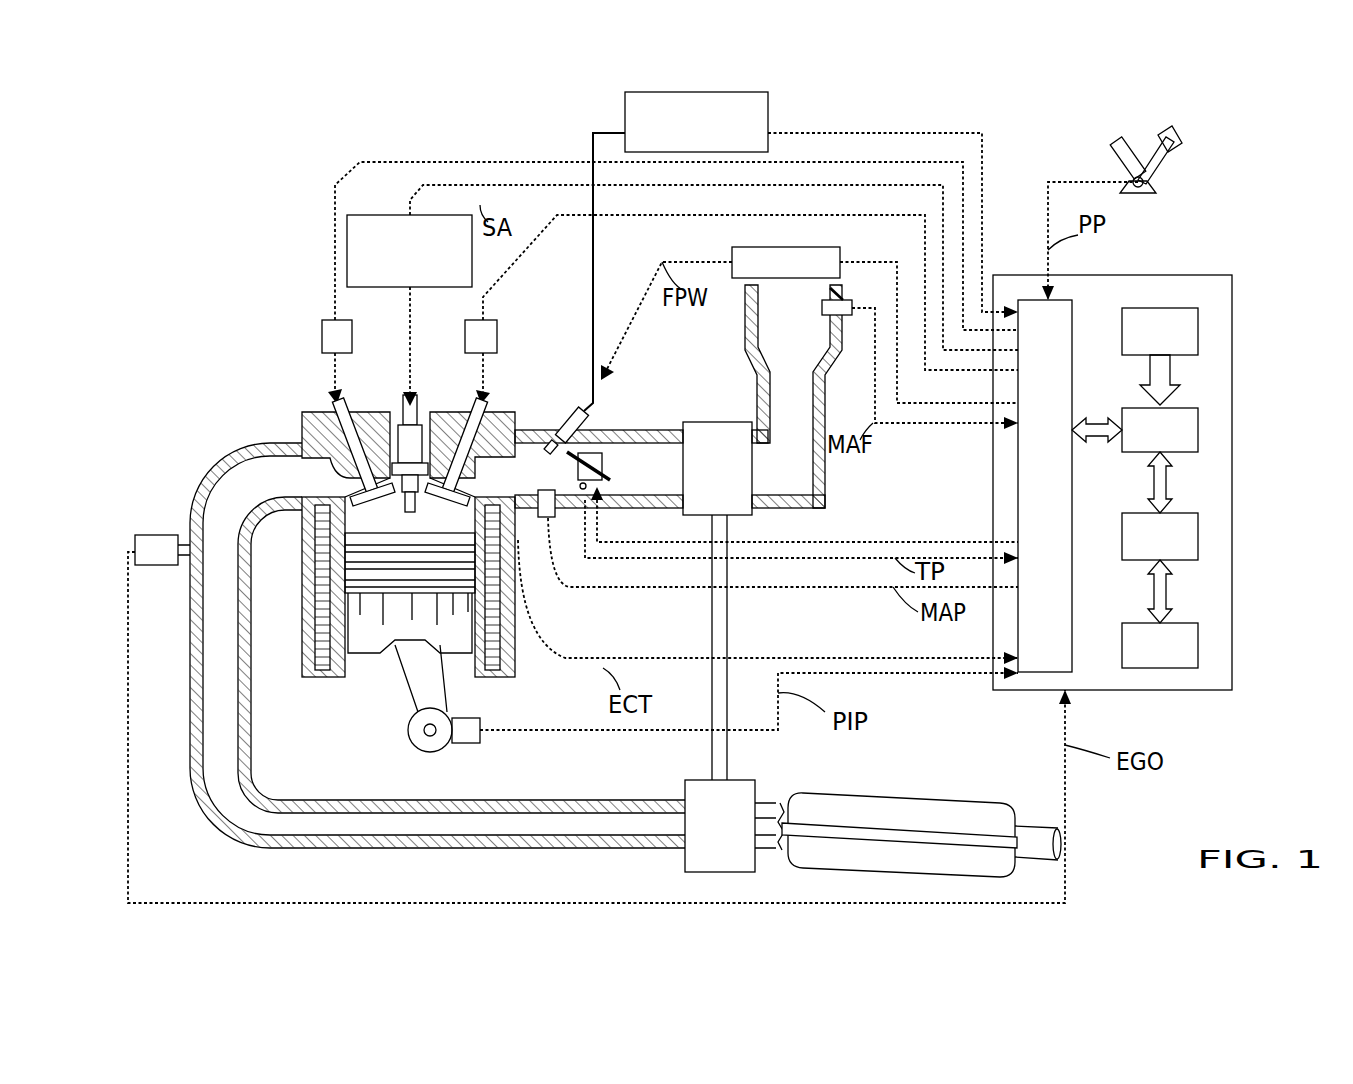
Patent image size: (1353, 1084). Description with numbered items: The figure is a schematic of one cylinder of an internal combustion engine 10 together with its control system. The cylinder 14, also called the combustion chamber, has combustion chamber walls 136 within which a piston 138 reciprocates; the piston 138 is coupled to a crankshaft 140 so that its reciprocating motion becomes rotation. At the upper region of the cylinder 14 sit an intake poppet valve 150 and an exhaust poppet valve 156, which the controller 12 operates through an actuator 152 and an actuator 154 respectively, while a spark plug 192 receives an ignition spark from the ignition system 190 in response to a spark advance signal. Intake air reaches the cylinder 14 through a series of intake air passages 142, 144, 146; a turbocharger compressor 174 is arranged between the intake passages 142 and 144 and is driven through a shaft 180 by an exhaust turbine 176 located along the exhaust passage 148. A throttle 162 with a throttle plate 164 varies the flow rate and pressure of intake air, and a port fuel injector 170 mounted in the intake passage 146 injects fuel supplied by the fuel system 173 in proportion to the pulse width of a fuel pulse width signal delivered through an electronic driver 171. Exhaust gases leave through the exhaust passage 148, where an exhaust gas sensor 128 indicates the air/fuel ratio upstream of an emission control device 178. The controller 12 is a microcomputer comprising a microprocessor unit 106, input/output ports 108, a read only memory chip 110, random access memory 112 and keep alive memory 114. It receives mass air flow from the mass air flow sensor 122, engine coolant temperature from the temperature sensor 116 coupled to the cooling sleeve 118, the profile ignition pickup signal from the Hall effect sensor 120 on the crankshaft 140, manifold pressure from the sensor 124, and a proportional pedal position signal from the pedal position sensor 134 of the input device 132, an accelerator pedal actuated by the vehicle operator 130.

The internal combustion engine 10 is at (222, 356).
The controller 12 is at (1232, 278).
The cylinder 14 is at (302, 545).
The microprocessor unit 106 is at (1198, 430).
The input/output ports 108 is at (1072, 312).
The read only memory chip 110 is at (1198, 328).
The random access memory 112 is at (1198, 535).
The keep alive memory 114 is at (1198, 645).
The temperature sensor 116 is at (520, 600).
The cooling sleeve 118 is at (506, 645).
The Hall effect sensor 120 is at (472, 745).
The mass air flow sensor 122 is at (846, 298).
The manifold pressure sensor 124 is at (555, 520).
The exhaust gas sensor 128 is at (135, 548).
The vehicle operator 130 is at (1178, 138).
The input device 132 is at (1118, 158).
The pedal position sensor 134 is at (1152, 183).
The combustion chamber walls 136 is at (345, 660).
The piston 138 is at (392, 655).
The crankshaft 140 is at (418, 750).
The intake air passage 142 is at (777, 337).
The intake air passage 144 is at (632, 482).
The intake air passage 146 is at (527, 482).
The exhaust passage 148 is at (254, 487).
The intake poppet valve 150 is at (460, 470).
The actuator 152 is at (465, 335).
The actuator 154 is at (322, 335).
The exhaust poppet valve 156 is at (302, 445).
The throttle 162 is at (576, 445).
The throttle plate 164 is at (566, 452).
The port fuel injector 170 is at (573, 412).
The electronic driver 171 is at (733, 250).
The fuel system 173 is at (768, 97).
The compressor 174 is at (718, 420).
The exhaust turbine 176 is at (685, 860).
The emission control device 178 is at (975, 803).
The shaft 180 is at (728, 740).
The ignition system 190 is at (360, 215).
The spark plug 192 is at (398, 460).